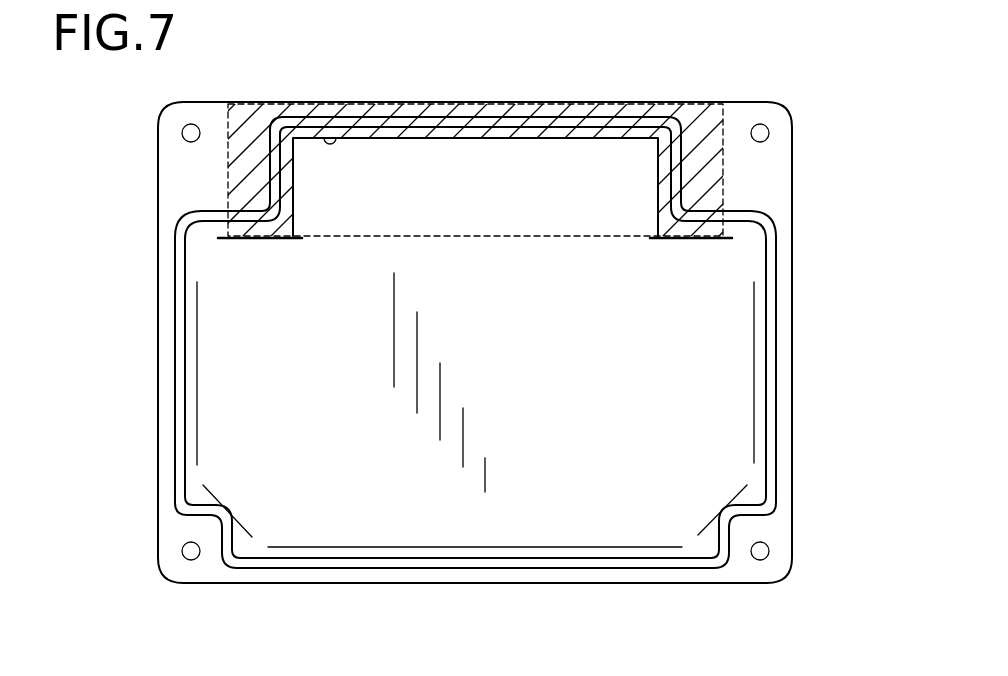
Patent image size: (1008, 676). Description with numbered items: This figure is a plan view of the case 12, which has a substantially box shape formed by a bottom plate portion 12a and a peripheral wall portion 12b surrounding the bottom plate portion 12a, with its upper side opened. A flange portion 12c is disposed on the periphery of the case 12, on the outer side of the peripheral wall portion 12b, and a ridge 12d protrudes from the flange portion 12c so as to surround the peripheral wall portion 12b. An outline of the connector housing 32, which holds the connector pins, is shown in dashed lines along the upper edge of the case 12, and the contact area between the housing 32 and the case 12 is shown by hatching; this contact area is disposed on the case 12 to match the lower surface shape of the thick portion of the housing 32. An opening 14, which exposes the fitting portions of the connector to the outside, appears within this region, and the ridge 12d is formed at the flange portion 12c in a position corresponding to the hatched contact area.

The case 12 is at (783, 185).
The bottom plate portion 12a is at (335, 517).
The peripheral wall portion 12b is at (400, 552).
The flange portion 12c is at (793, 250).
The ridge 12d is at (775, 293).
The opening 14 is at (331, 133).
The housing 32 is at (732, 122).